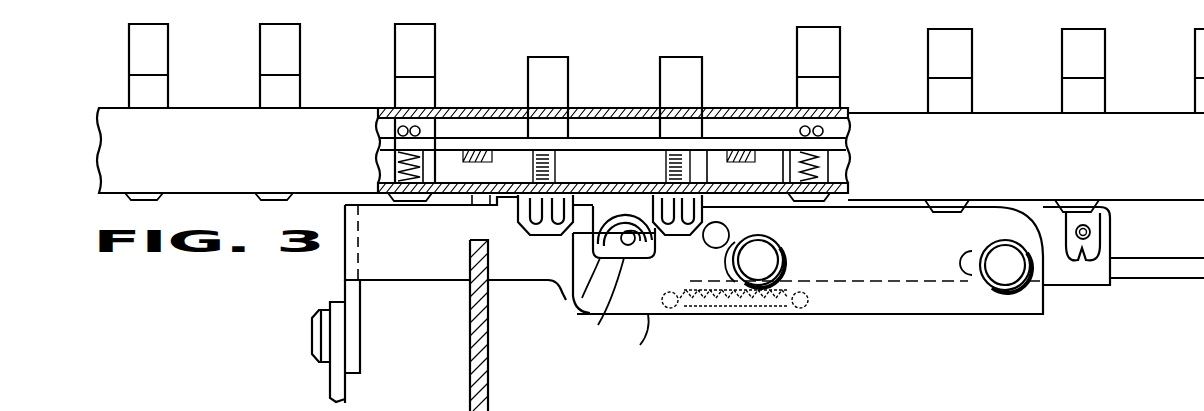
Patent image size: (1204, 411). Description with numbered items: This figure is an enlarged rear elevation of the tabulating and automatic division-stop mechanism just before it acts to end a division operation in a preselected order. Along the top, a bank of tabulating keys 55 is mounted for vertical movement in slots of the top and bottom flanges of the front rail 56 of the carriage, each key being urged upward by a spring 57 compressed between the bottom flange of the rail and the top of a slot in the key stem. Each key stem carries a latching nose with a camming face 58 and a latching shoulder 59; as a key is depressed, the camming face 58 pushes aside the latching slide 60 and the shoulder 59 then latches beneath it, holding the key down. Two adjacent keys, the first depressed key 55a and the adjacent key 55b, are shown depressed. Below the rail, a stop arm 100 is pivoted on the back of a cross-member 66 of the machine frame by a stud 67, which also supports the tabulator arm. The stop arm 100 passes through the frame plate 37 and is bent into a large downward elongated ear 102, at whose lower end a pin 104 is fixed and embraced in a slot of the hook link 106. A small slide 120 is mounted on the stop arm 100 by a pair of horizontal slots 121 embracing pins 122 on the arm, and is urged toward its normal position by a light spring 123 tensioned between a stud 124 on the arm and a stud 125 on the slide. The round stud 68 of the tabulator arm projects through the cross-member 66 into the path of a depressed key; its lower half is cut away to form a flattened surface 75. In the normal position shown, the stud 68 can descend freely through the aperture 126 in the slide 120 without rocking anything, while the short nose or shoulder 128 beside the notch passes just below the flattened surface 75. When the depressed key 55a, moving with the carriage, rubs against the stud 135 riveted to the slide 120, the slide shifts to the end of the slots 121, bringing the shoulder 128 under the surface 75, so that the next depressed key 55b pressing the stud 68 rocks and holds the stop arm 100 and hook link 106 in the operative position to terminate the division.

The tabulating keys 55 is at (424, 50).
The spring 57 is at (424, 158).
The adjacent tabulator key 55b is at (567, 83).
The camming face 58 is at (520, 170).
The first depressed tabulator key 55a is at (700, 82).
The latching shoulder 59 is at (657, 168).
The latching slide 60 is at (827, 150).
The front rail of the carriage 56 is at (1178, 172).
The cross-member 66 is at (1178, 245).
The stop arm 100 is at (428, 268).
The elongated ear 102 is at (350, 352).
The pin 104 is at (325, 330).
The hook link 106 is at (335, 385).
The frame plate 37 is at (488, 400).
The small slide 120 is at (1020, 303).
The nose or shoulder 128 is at (558, 290).
The round stud 68 is at (582, 298).
The flattened surface 75 is at (598, 325).
The aperture or notch 126 is at (640, 345).
The stud 135 is at (720, 240).
The spring 123 is at (737, 303).
The stud 124 is at (672, 303).
The stud 125 is at (803, 303).
The horizontal slots 121 is at (968, 257).
The pins 122 is at (1000, 257).
The stud 67 is at (1081, 232).